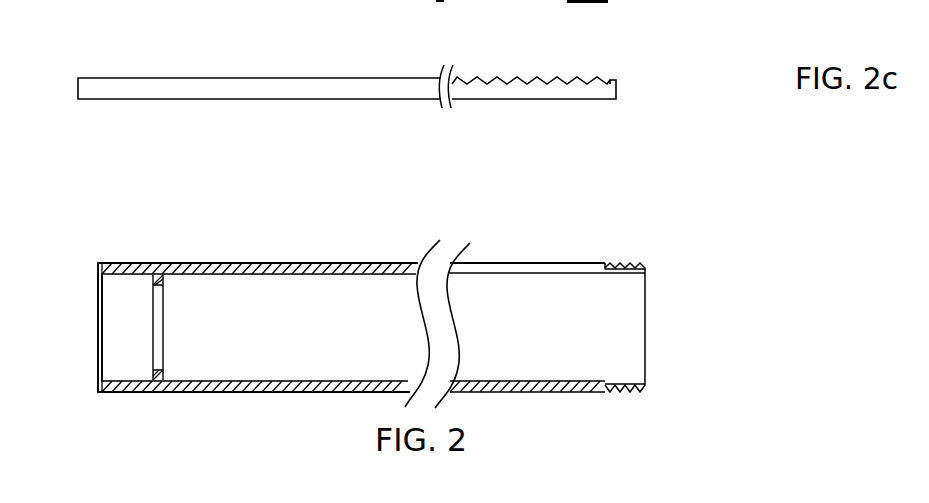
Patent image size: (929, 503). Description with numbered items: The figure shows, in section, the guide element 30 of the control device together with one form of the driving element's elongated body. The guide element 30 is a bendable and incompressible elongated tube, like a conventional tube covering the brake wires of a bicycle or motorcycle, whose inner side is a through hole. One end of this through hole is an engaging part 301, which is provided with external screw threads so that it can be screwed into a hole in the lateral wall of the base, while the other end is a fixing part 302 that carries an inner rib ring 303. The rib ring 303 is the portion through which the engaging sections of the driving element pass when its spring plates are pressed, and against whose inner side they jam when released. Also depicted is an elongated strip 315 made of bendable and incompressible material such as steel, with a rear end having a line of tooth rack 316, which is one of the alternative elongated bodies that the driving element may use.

In FIG. 2, the guide element 30 is at (233, 263).
In FIG. 2, the engaging part 301 is at (618, 263).
In FIG. 2, the fixing part 302 is at (113, 263).
In FIG. 2, the inner rib ring 303 is at (154, 277).
In FIG. 2c, the elongated strip 315 is at (325, 97).
In FIG. 2c, the line of tooth rack 316 is at (600, 80).